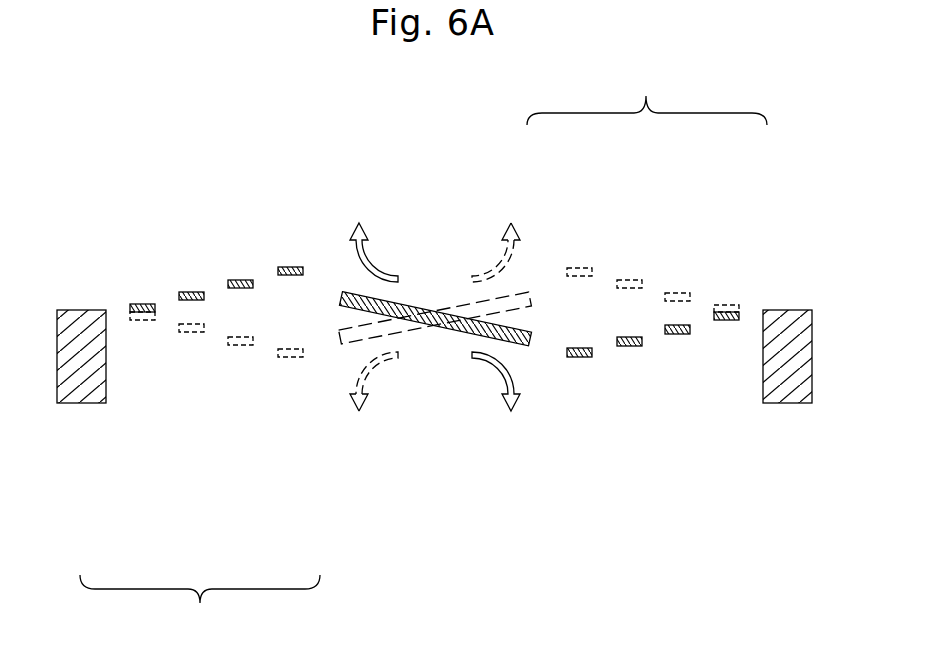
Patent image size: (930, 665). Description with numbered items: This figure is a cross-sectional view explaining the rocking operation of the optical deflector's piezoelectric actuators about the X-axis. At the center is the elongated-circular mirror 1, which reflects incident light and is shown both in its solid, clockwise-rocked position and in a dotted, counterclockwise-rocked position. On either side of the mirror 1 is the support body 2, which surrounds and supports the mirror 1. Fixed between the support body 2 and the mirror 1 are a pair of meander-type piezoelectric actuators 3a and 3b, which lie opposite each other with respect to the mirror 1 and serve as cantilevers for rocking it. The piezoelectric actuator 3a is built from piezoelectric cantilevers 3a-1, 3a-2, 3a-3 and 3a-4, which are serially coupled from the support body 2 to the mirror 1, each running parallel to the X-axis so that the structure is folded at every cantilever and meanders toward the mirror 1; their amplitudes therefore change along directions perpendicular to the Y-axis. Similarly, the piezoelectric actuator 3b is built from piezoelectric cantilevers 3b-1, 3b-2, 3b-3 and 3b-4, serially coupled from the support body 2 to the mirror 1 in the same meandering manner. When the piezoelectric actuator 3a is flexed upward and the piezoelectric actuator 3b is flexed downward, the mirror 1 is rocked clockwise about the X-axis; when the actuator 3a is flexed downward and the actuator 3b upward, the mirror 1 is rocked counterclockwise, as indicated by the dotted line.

The mirror 1 is at (408, 302).
The support body 2 is at (70, 310).
The piezoelectric actuator 3a is at (200, 388).
The piezoelectric cantilever 3a-1 is at (143, 304).
The piezoelectric cantilever 3a-2 is at (191, 292).
The piezoelectric cantilever 3a-3 is at (244, 280).
The piezoelectric cantilever 3a-4 is at (292, 267).
The piezoelectric actuator 3b is at (647, 313).
The piezoelectric cantilever 3b-1 is at (726, 305).
The piezoelectric cantilever 3b-2 is at (677, 293).
The piezoelectric cantilever 3b-3 is at (628, 280).
The piezoelectric cantilever 3b-4 is at (580, 268).